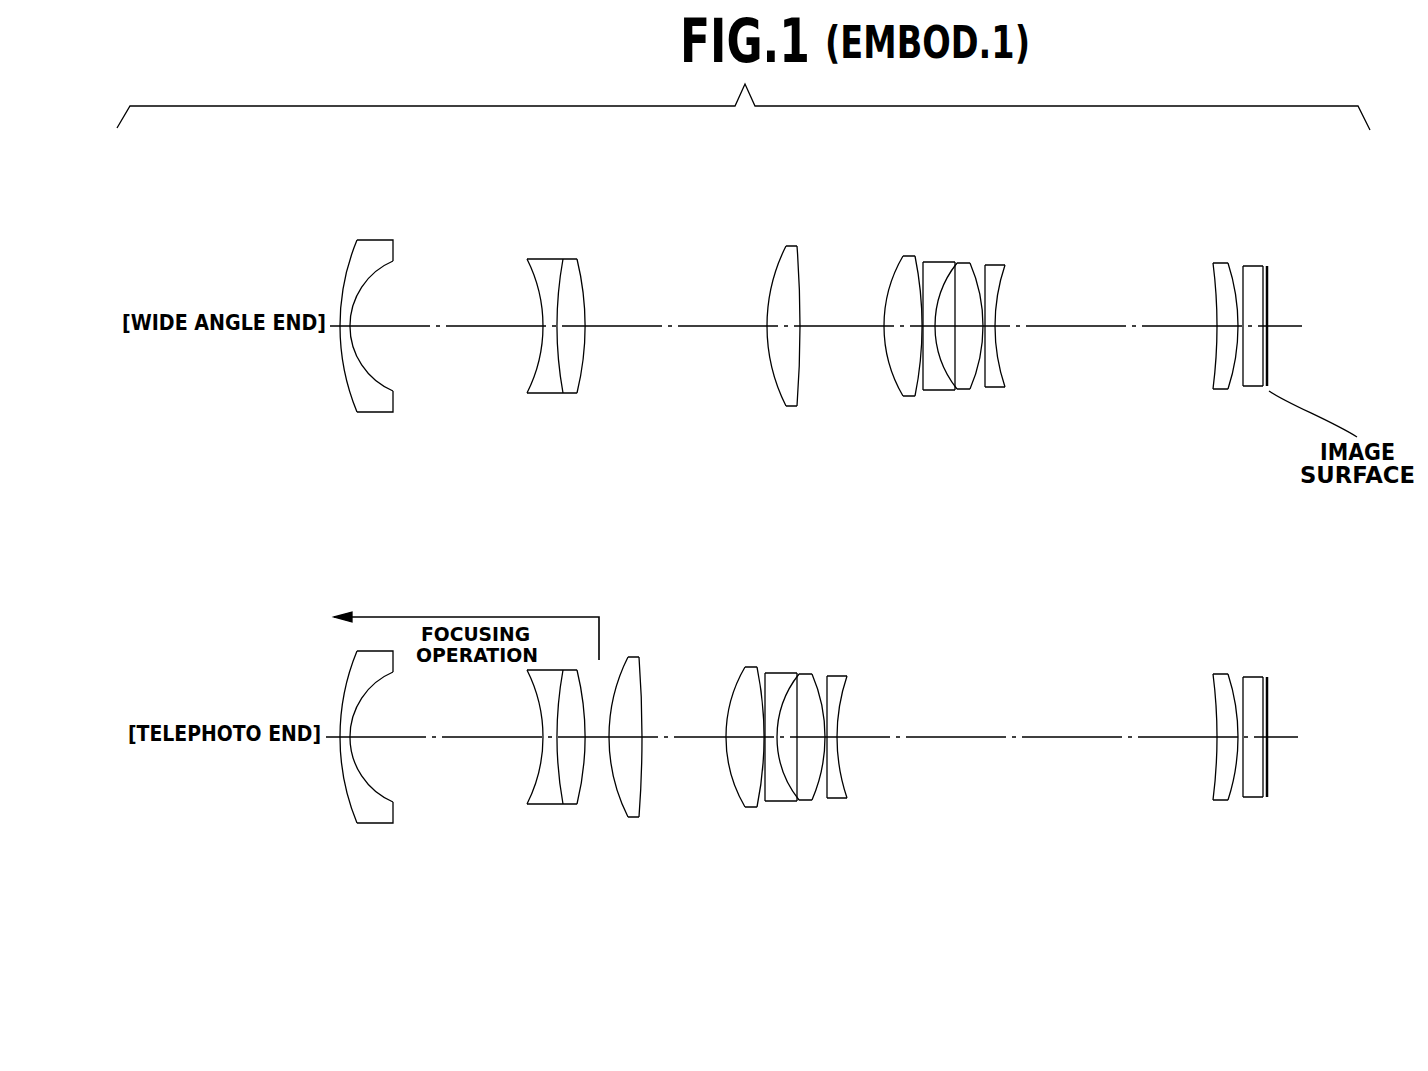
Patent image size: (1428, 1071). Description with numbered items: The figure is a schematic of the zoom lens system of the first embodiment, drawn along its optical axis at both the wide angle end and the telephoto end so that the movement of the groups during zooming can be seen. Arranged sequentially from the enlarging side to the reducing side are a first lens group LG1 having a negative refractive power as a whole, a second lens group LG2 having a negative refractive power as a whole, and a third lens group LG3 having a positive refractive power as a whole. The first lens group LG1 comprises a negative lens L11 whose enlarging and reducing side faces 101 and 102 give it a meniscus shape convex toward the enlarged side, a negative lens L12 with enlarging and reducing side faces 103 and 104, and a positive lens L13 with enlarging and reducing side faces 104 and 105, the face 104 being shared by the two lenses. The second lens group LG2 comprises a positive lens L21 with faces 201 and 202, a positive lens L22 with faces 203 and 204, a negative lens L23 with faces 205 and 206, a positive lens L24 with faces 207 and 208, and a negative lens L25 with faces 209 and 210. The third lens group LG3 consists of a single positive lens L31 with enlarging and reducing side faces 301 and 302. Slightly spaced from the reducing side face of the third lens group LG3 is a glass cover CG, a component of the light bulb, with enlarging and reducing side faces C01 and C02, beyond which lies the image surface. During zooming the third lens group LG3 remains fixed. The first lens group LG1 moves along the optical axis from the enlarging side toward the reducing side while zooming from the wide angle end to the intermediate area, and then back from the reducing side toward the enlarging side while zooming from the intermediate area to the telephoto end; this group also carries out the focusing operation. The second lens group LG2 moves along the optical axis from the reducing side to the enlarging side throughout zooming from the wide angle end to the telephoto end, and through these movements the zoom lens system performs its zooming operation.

The enlarging side face 101 is at (344, 271).
The reducing side face 102 is at (378, 268).
The enlarging side face 103 is at (533, 258).
The reducing side face 104 is at (557, 278).
The reducing side face 105 is at (585, 276).
The enlarging side face 201 is at (774, 270).
The reducing side face 202 is at (806, 246).
The enlarging side face 203 is at (891, 283).
The reducing side face 204 is at (920, 278).
The enlarging side face 205 is at (921, 262).
The reducing side face 206 is at (946, 277).
The enlarging side face 207 is at (957, 263).
The reducing side face 208 is at (988, 270).
The enlarging side face 209 is at (1000, 280).
The reducing side face 210 is at (1005, 283).
The enlarging side face 301 is at (1213, 283).
The reducing side face 302 is at (1227, 277).
The enlarging side face C01 is at (1238, 275).
The reducing side face C02 is at (1258, 268).
The negative lens L11 is at (374, 401).
The negative lens L12 is at (543, 381).
The positive lens L13 is at (570, 378).
The positive lens L21 is at (790, 394).
The positive lens L22 is at (910, 384).
The negative lens L23 is at (937, 384).
The positive lens L24 is at (968, 384).
The negative lens L25 is at (997, 381).
The positive lens L31 is at (1222, 381).
The glass cover CG is at (1252, 384).
The first lens group LG1 is at (473, 471).
The second lens group LG2 is at (877, 502).
The third lens group LG3 is at (1222, 495).